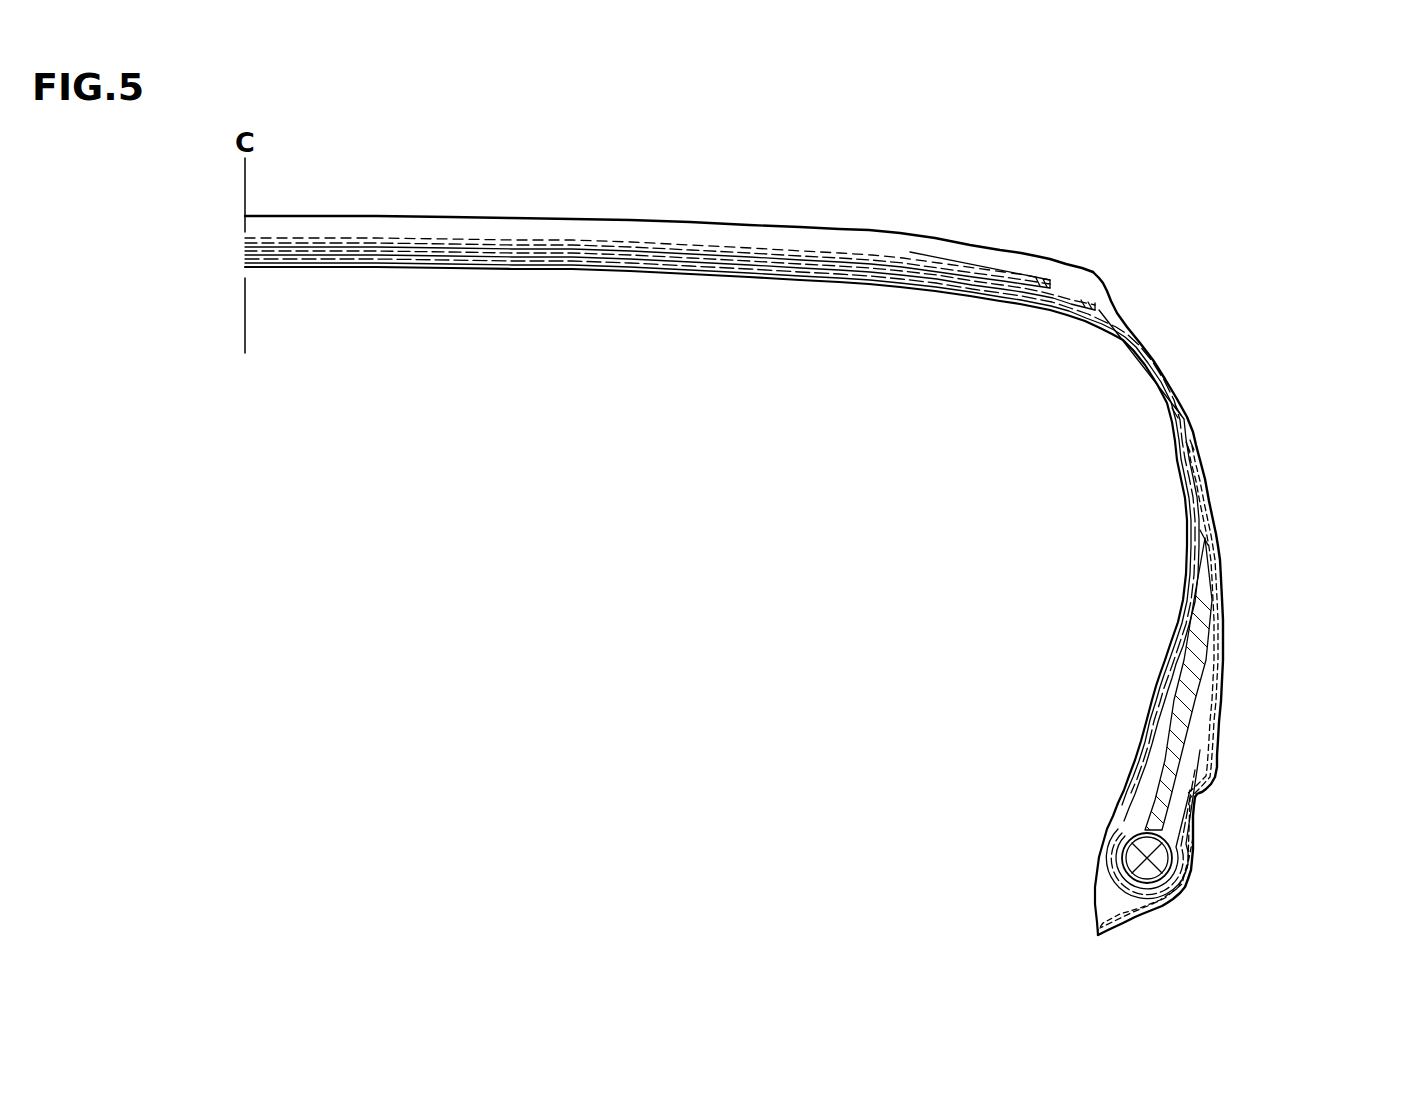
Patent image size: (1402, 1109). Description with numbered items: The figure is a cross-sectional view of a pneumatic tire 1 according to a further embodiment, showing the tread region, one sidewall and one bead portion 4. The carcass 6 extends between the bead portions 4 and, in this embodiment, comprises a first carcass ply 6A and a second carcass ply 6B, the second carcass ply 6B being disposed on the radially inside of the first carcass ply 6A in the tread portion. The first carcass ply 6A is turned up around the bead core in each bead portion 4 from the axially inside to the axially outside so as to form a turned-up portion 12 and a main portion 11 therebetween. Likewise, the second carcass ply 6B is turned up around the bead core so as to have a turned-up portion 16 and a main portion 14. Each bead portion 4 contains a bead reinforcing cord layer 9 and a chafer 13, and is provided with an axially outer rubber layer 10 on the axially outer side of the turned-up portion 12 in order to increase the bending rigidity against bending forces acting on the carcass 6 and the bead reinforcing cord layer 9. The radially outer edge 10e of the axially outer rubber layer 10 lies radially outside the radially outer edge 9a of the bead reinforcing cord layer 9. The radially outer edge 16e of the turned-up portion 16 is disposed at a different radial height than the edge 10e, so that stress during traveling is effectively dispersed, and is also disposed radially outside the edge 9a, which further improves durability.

The pneumatic tire 1 is at (1237, 249).
The bead portion 4 is at (1275, 835).
The carcass 6 is at (670, 332).
The first carcass ply 6A is at (738, 270).
The second carcass ply 6B is at (757, 365).
The bead reinforcing cord layer 9 is at (1205, 567).
The radially outer edge of bead reinforcing cord layer 9a is at (1202, 538).
The axially outer rubber layer 10 is at (1203, 697).
The radially outer edge of axially outer rubber layer 10e is at (1192, 445).
The main portion of first carcass ply 11 is at (1190, 620).
The turned-up portion of first carcass ply 12 is at (1180, 690).
The chafer 13 is at (1167, 910).
The main portion of second carcass ply 14 is at (1115, 822).
The turned-up portion of second carcass ply 16 is at (1165, 757).
The radially outer edge of turned-up portion of second carcass ply 16e is at (1178, 410).